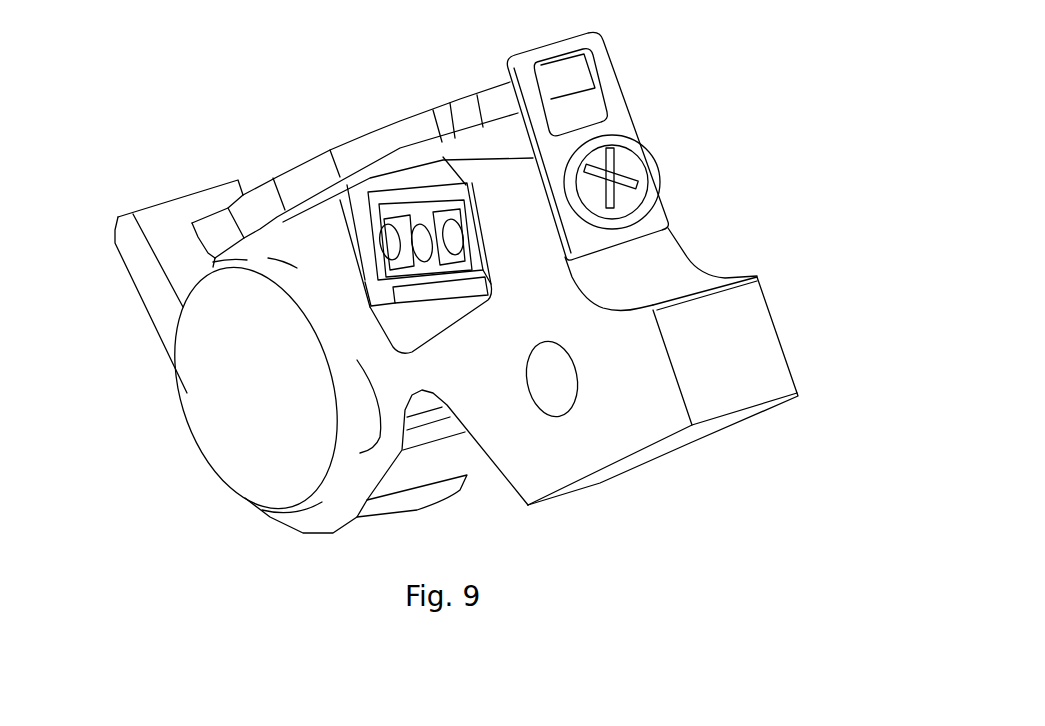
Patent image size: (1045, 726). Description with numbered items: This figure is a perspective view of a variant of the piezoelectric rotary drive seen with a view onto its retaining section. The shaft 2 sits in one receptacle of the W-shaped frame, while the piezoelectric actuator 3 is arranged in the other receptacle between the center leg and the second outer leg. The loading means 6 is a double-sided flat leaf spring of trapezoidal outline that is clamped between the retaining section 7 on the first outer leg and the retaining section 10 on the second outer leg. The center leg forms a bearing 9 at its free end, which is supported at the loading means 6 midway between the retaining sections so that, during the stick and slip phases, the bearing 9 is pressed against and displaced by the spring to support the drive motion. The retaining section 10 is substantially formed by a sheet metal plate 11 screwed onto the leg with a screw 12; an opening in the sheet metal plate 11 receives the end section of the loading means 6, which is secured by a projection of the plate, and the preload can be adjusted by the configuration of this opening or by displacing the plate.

The shaft 2 is at (263, 426).
The piezoelectric actuator 3 is at (408, 262).
The loading means 6 is at (303, 177).
The retaining section 7 is at (167, 212).
The bearing 9 is at (334, 208).
The retaining section 10 is at (614, 37).
The sheet metal plate 11 is at (612, 108).
The screw 12 is at (627, 152).